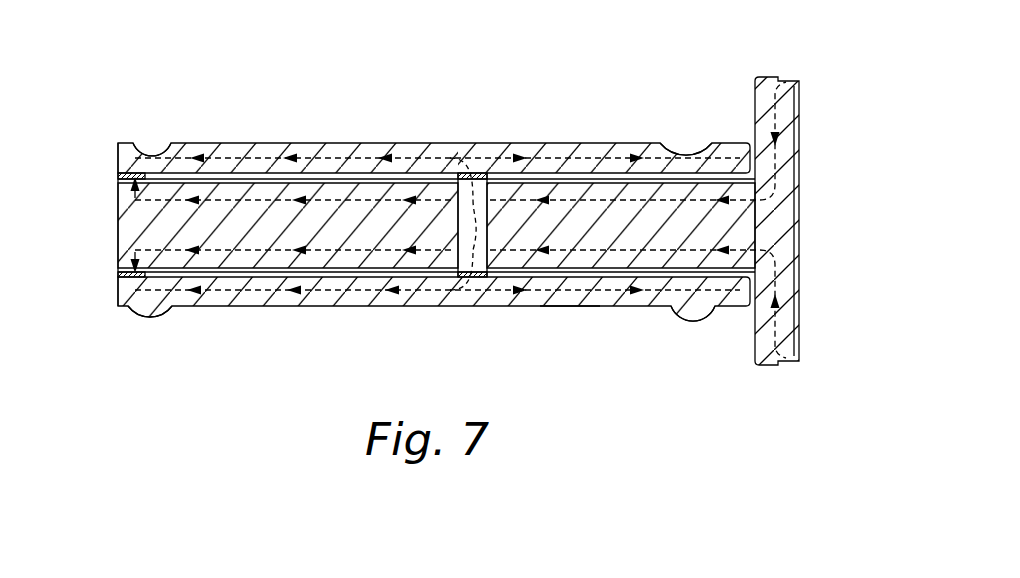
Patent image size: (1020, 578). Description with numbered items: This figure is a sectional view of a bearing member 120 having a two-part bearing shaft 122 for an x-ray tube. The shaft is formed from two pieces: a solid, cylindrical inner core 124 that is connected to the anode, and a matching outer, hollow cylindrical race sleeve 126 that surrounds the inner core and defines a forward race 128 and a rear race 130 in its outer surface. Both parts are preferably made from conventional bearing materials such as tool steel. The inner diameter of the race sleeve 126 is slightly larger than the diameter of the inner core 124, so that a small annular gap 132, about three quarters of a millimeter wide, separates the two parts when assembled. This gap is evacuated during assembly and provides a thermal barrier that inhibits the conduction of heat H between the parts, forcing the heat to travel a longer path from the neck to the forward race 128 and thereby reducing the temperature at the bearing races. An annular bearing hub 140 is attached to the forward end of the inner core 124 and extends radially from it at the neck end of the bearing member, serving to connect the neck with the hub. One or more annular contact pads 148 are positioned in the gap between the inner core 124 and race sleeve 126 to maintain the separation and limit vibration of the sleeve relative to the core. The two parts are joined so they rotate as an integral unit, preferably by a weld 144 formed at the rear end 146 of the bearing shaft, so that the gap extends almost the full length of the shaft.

The bearing member 120 is at (93, 256).
The two-part bearing shaft 122 is at (366, 120).
The inner core 124 is at (300, 226).
The race sleeve 126 is at (613, 296).
The forward race 128 is at (684, 150).
The rear race 130 is at (148, 157).
The annular gap 132 is at (348, 273).
The bearing hub 140 is at (799, 160).
The weld 144 is at (150, 303).
The rear end 146 is at (118, 224).
The contact pad 148 is at (463, 275).
The heat H is at (567, 298).